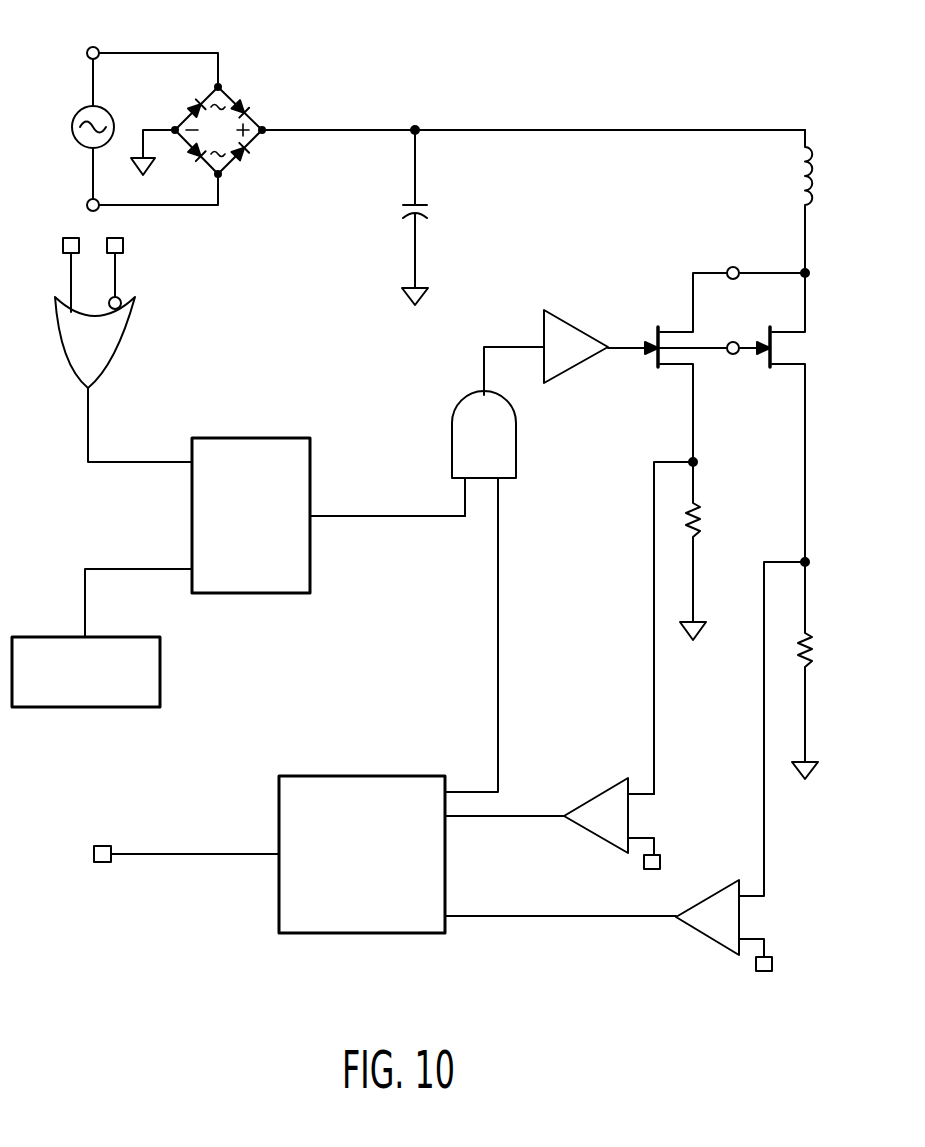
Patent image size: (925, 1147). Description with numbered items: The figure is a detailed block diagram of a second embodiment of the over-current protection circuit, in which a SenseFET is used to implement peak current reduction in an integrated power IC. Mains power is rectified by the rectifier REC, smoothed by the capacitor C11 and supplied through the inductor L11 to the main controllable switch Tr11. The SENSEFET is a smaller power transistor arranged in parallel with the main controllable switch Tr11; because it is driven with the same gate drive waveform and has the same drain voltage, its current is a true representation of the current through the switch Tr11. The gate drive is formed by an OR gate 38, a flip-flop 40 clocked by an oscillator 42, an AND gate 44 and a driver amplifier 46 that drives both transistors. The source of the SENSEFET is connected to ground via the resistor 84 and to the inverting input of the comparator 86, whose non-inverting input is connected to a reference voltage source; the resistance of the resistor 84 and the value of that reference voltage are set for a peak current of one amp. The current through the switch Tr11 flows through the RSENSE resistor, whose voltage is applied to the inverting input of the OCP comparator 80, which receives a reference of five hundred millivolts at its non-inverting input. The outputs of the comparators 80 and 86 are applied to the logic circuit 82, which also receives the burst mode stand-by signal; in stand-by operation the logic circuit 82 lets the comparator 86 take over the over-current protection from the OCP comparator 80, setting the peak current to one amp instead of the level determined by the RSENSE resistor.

The OR gate 38 is at (120, 340).
The RS flip-flop 40 is at (280, 448).
The oscillator 42 is at (150, 650).
The AND gate 44 is at (468, 438).
The driver amplifier 46 is at (545, 326).
The OCP comparator 80 is at (700, 928).
The logic circuit 82 is at (355, 915).
The resistor 84 is at (700, 518).
The comparator 86 is at (603, 800).
The rectifier bridge REC is at (233, 97).
The smoothing capacitor C11 is at (432, 212).
The inductor L11 is at (800, 170).
The SenseFET SENSEFET is at (655, 327).
The controllable switch Tr11 is at (790, 366).
The R_SENSE resistor RSENSE is at (797, 667).